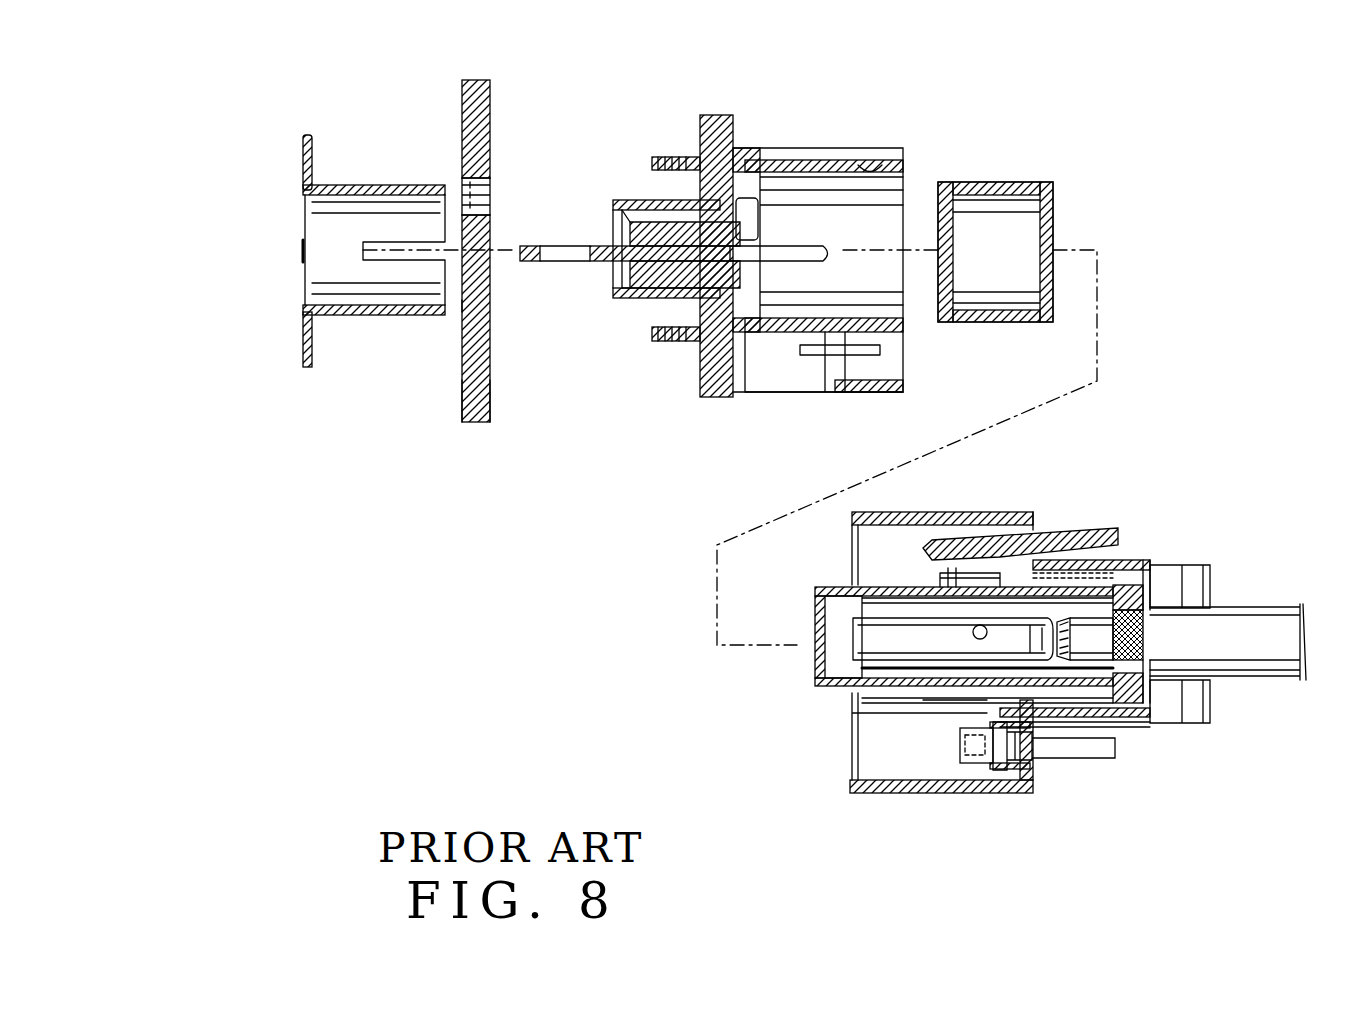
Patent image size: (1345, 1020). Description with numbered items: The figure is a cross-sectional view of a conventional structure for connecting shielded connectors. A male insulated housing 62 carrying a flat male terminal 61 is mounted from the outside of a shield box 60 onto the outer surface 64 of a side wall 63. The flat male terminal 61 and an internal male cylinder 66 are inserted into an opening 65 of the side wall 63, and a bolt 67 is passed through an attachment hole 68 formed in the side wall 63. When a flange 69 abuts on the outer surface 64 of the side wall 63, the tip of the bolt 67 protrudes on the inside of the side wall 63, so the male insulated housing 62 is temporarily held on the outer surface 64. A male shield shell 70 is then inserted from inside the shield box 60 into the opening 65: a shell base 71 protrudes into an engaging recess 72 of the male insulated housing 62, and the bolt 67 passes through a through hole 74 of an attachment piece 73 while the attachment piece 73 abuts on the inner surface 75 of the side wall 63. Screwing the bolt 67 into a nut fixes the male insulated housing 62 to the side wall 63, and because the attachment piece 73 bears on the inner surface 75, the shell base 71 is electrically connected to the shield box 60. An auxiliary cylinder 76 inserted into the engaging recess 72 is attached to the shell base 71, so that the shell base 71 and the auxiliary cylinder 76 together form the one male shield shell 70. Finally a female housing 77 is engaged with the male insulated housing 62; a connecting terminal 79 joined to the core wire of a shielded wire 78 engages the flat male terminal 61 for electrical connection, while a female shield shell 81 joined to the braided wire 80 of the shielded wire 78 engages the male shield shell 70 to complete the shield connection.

The shield box 60 is at (462, 85).
The flat male terminal 61 is at (525, 246).
The male insulated housing 62 is at (921, 172).
The side wall 63 is at (490, 90).
The outer surface 64 is at (493, 388).
The opening 65 is at (458, 310).
The internal male cylinder 66 is at (640, 205).
The bolt 67 is at (672, 160).
The attachment hole 68 is at (455, 340).
The flange 69 is at (725, 400).
The male shield shell 70 is at (270, 362).
The shell base 71 is at (340, 320).
The engaging recess 72 is at (870, 170).
The attachment piece 73 is at (312, 140).
The through hole 74 is at (303, 165).
The inner surface 75 is at (470, 340).
The auxiliary cylinder 76 is at (1005, 185).
The female housing 77 is at (833, 746).
The shielded wire 78 is at (1255, 620).
The connecting terminal 79 is at (890, 650).
The braided wire 80 is at (1150, 650).
The female shield shell 81 is at (1120, 730).